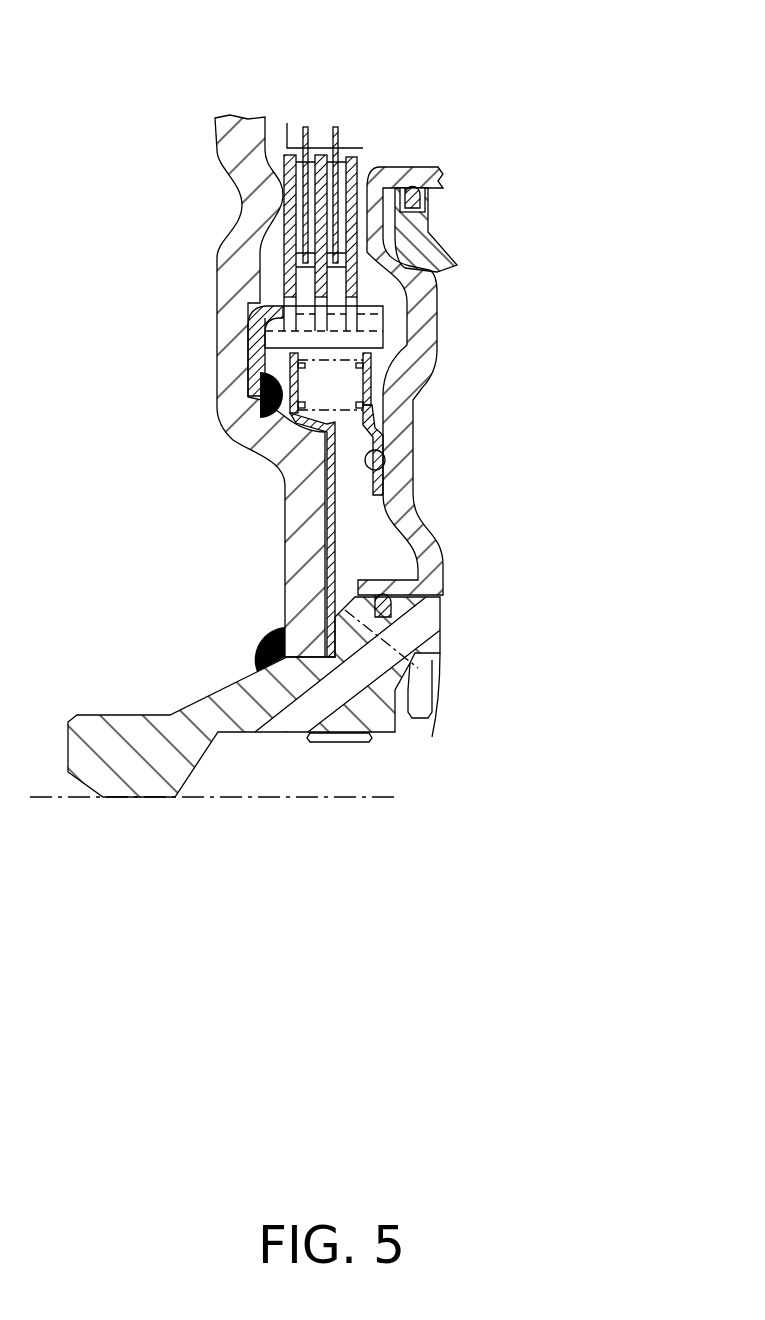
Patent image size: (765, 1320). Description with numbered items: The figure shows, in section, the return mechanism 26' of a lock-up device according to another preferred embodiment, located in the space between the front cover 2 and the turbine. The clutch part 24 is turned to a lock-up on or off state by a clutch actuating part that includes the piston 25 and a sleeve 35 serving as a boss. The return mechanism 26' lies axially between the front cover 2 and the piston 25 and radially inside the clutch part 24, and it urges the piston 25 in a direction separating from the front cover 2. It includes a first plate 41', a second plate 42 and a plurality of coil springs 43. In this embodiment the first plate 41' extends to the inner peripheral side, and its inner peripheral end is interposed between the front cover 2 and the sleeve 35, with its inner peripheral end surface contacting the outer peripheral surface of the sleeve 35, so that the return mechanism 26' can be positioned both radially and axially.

The front cover 2 is at (230, 330).
The clutch part 24 is at (364, 164).
The piston 25 is at (425, 325).
The return mechanism 26' is at (447, 378).
The sleeve 35 is at (384, 713).
The first plate 41' is at (418, 535).
The second plate 42 is at (383, 466).
The coil springs 43 is at (333, 410).